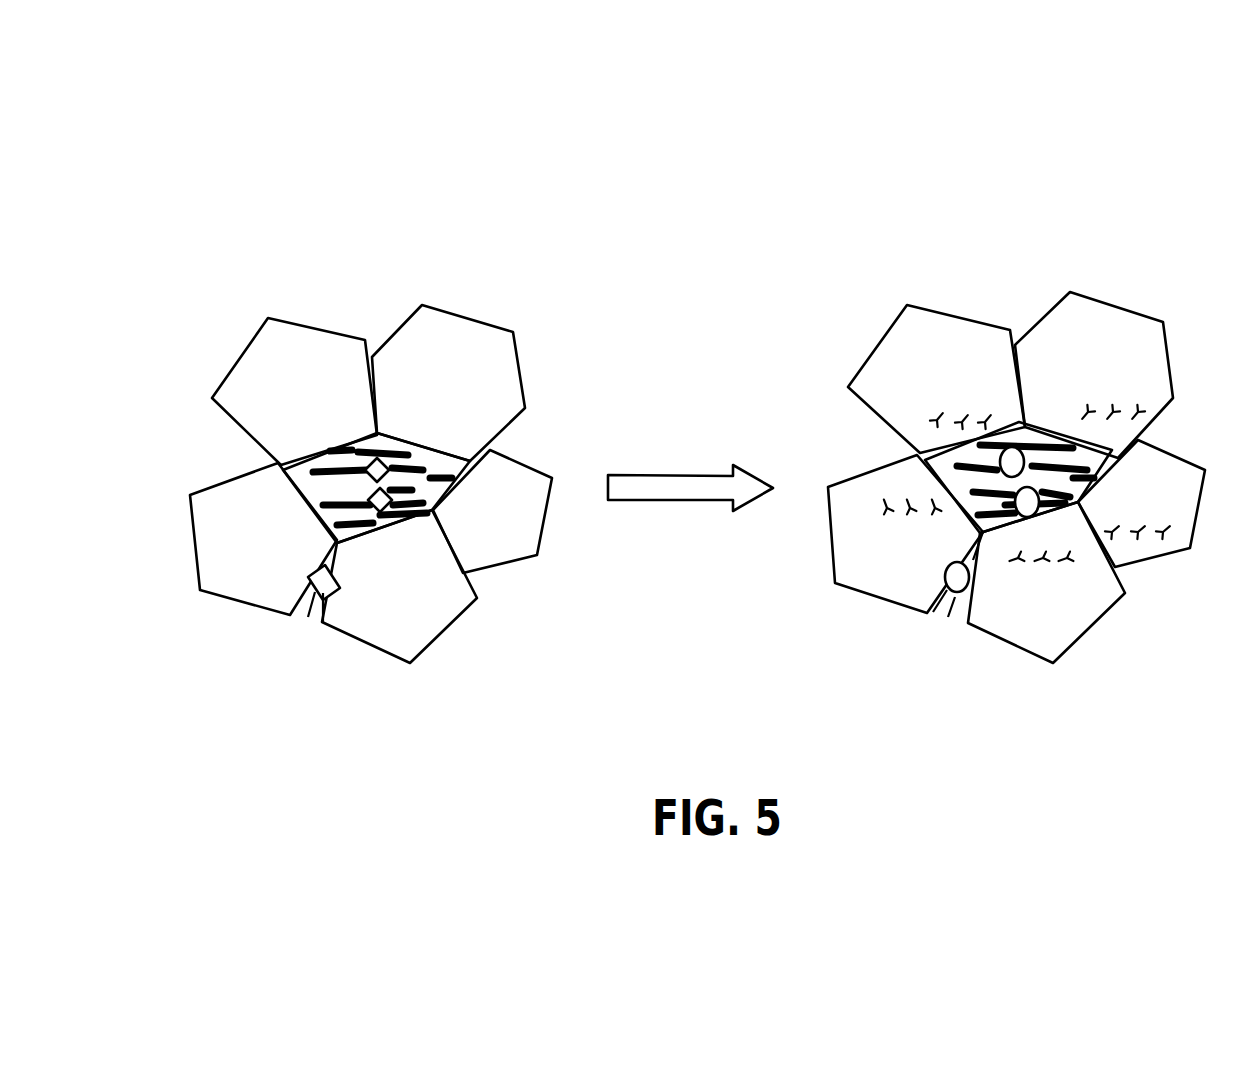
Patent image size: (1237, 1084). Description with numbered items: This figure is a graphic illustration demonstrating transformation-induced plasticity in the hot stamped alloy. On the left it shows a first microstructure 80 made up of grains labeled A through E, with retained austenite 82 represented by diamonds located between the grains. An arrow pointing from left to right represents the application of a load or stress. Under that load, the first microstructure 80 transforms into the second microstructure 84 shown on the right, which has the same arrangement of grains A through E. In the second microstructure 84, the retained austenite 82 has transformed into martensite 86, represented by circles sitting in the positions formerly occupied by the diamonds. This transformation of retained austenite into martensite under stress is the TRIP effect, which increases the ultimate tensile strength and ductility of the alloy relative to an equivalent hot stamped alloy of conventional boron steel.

The first microstructure 80 is at (384, 445).
The retained austenite 82 is at (435, 484).
The second microstructure 84 is at (1023, 449).
The martensite 86 is at (1050, 475).